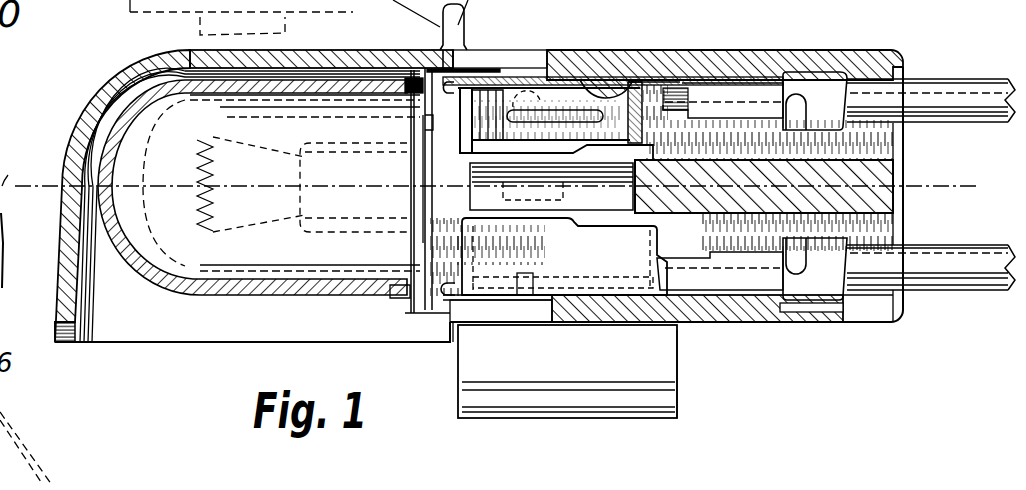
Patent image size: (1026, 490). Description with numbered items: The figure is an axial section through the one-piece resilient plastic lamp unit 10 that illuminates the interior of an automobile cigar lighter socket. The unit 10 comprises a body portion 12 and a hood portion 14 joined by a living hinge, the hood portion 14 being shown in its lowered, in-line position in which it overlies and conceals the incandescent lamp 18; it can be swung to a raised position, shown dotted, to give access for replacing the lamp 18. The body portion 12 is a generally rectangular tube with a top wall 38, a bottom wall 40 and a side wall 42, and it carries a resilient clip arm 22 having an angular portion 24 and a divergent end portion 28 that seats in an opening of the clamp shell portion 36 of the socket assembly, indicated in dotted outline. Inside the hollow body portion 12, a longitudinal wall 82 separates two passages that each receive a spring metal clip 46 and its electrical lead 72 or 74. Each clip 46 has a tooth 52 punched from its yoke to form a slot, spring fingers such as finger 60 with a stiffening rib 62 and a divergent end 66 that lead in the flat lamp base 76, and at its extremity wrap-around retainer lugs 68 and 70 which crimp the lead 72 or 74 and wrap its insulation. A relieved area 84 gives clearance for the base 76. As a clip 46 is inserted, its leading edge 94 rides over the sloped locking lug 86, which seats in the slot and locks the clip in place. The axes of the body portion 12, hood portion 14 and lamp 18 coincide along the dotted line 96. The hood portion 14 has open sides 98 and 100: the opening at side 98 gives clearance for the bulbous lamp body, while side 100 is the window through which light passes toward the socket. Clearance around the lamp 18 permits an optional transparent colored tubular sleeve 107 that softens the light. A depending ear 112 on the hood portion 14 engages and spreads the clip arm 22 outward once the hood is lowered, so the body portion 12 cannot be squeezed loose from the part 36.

The lamp unit 10 is at (402, 423).
The body portion 12 is at (727, 340).
The hood portion 14 is at (180, 353).
The lamp 18 is at (152, 246).
The clip arm 22 is at (19, 167).
The angular portion 24 is at (663, 358).
The divergent end portion 28 is at (582, 402).
The clamp shell portion 36 is at (22, 432).
The top wall 38 is at (705, 58).
The bottom wall 40 is at (755, 312).
The side wall 42 is at (893, 135).
The spring metal clip 46 is at (508, 68).
The tooth 52 is at (633, 102).
The spring finger 60 is at (535, 103).
The stiffening rib 62 is at (565, 113).
The divergent end 66 is at (487, 120).
The retainer lug 68 is at (728, 97).
The retainer lug 70 is at (823, 108).
The electrical lead 72 is at (950, 93).
The electrical lead 74 is at (965, 262).
The lamp base 76 is at (520, 110).
The longitudinal wall 82 is at (887, 180).
The relieved area 84 is at (603, 192).
The sloped locking lug 86 is at (597, 80).
The leading edge 94 is at (447, 82).
The dotted line 96 is at (968, 183).
The open side 98 is at (348, 18).
The open side 100 is at (230, 337).
The tubular sleeve 107 is at (230, 296).
The depending ear 112 is at (200, 23).